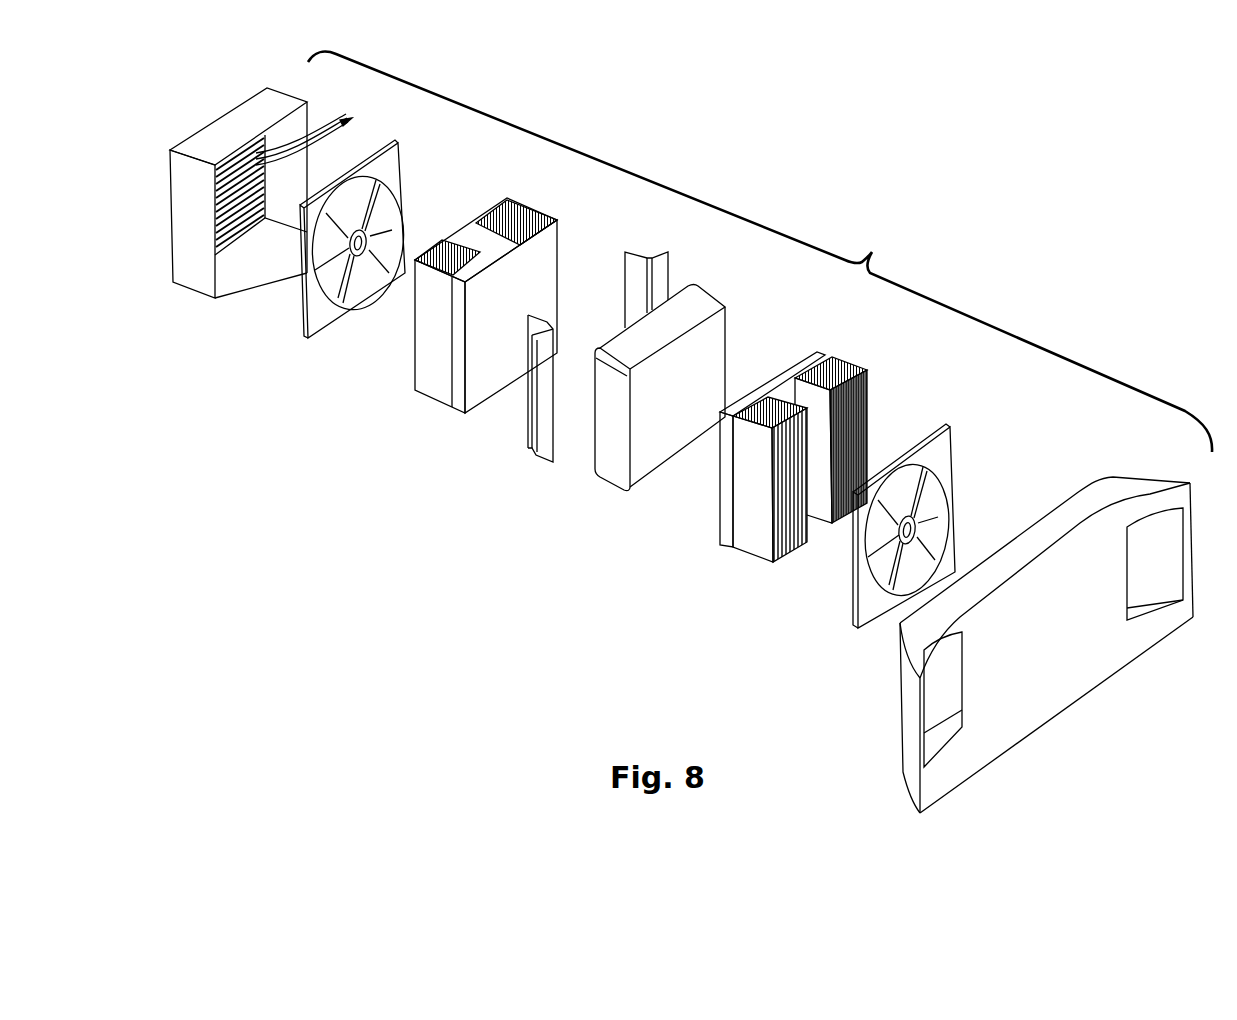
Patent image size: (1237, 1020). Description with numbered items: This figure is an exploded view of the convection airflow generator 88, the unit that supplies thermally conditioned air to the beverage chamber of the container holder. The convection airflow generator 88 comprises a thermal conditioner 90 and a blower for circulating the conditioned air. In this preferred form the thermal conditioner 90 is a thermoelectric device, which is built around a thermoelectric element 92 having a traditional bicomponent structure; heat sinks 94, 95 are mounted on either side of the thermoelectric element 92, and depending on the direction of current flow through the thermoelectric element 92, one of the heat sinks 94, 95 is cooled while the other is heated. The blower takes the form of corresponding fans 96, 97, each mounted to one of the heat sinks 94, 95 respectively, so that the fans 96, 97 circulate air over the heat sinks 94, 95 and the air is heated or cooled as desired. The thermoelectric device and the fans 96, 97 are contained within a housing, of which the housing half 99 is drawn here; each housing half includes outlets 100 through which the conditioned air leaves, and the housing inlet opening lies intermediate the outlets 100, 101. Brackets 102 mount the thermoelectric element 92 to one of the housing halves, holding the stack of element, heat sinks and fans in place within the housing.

The convection airflow generator 88 is at (760, 252).
The thermal conditioner 90 is at (913, 775).
The thermoelectric element 92 is at (611, 492).
The heat sink 94 is at (743, 543).
The heat sink 95 is at (432, 387).
The fan 96 is at (852, 613).
The fan 97 is at (303, 327).
The second housing half 99 is at (203, 290).
The outlets 100 is at (933, 708).
The outlet 101 is at (317, 132).
The brackets 102 is at (537, 455).